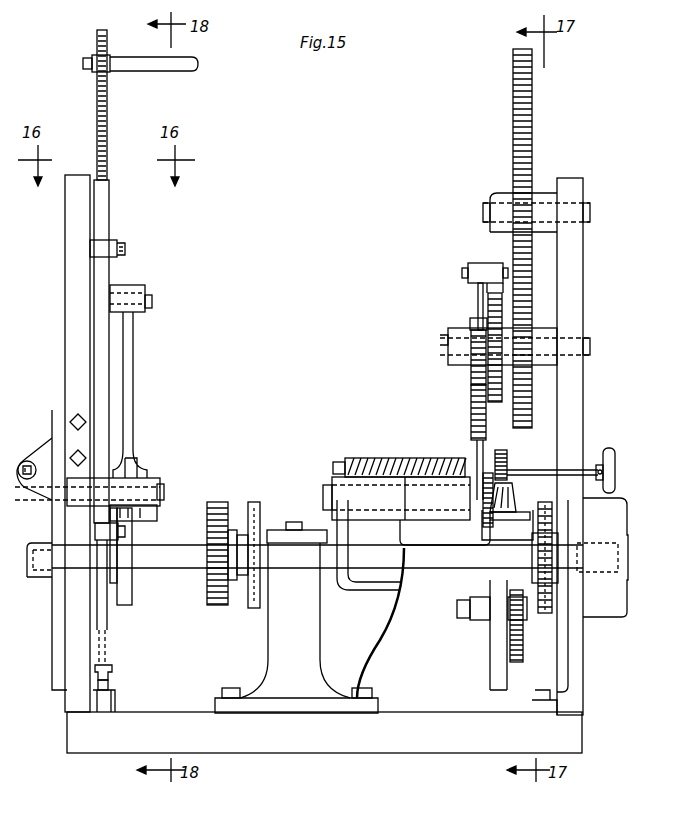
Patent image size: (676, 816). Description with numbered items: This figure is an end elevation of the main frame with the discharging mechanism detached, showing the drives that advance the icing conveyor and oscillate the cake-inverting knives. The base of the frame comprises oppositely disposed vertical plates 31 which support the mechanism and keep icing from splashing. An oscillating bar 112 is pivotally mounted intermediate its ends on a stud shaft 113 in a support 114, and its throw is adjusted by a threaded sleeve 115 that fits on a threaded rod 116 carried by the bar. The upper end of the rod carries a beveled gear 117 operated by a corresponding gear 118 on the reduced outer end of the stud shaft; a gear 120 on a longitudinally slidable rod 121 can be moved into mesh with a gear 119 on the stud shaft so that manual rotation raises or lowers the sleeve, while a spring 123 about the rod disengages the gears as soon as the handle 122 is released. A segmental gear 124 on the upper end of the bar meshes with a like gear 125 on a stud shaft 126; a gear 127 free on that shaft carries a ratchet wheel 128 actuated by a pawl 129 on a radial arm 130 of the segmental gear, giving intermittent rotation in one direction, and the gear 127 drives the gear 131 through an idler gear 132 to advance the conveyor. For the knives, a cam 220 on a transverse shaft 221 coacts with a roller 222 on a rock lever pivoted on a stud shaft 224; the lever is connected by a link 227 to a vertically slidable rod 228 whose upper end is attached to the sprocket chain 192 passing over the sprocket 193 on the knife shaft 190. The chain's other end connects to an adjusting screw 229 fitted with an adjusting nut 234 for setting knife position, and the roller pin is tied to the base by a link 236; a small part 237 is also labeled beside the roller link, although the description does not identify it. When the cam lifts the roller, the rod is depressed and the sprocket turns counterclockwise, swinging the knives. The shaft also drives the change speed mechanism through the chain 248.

The vertical plates 31 is at (70, 285).
The oscillating bar 112 is at (477, 455).
The stud shaft 113 is at (330, 493).
The support 114 is at (366, 632).
The threaded sleeve 115 is at (522, 612).
The threaded rod 116 is at (524, 645).
The beveled gear 117 is at (528, 505).
The gear 118 is at (508, 497).
The gear 119 is at (445, 532).
The gear 120 is at (497, 453).
The longitudinally slidable rod 121 is at (541, 473).
The handle 122 is at (617, 470).
The spring 123 is at (418, 458).
The segmental gear 124 is at (471, 421).
The segmental gear 125 is at (480, 377).
The stud shaft 126 is at (476, 322).
The gear 127 is at (523, 393).
The ratchet wheel 128 is at (498, 312).
The pawl 129 is at (494, 268).
The radial arm 130 is at (477, 322).
The gear 131 is at (533, 107).
The idler gear 132 is at (527, 258).
The transverse shaft 190 is at (185, 58).
The chain 192 is at (109, 108).
The sprocket 193 is at (97, 52).
The cam 220 is at (126, 606).
The transverse shaft 221 is at (173, 548).
The roller 222 is at (118, 513).
The stud shaft 224 is at (29, 465).
The link 227 is at (134, 358).
The vertically slidable rod 228 is at (110, 218).
The adjusting screw 229 is at (112, 685).
The adjusting nut 234 is at (112, 672).
The link 236 is at (162, 512).
The pin 237 is at (166, 490).
The chain 248 is at (254, 610).